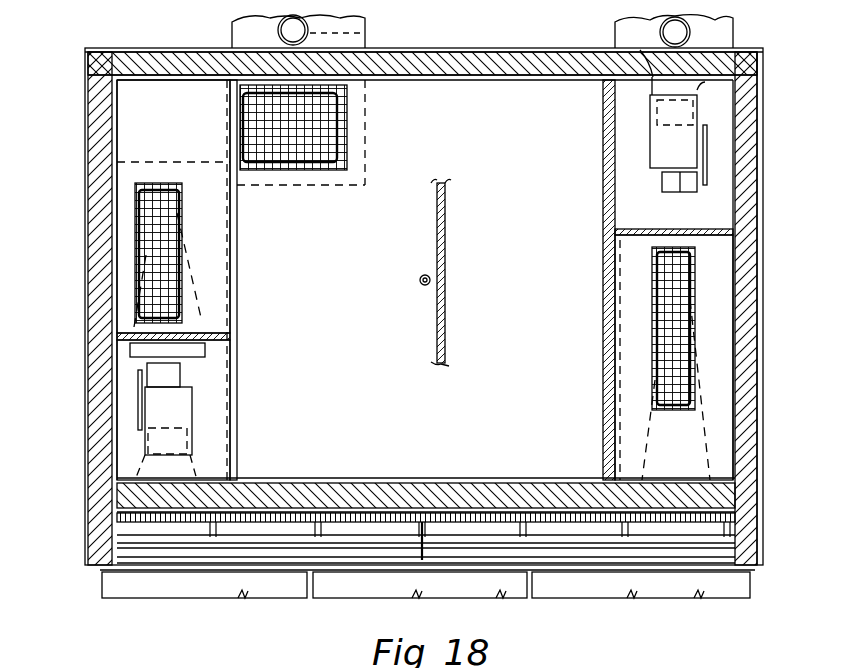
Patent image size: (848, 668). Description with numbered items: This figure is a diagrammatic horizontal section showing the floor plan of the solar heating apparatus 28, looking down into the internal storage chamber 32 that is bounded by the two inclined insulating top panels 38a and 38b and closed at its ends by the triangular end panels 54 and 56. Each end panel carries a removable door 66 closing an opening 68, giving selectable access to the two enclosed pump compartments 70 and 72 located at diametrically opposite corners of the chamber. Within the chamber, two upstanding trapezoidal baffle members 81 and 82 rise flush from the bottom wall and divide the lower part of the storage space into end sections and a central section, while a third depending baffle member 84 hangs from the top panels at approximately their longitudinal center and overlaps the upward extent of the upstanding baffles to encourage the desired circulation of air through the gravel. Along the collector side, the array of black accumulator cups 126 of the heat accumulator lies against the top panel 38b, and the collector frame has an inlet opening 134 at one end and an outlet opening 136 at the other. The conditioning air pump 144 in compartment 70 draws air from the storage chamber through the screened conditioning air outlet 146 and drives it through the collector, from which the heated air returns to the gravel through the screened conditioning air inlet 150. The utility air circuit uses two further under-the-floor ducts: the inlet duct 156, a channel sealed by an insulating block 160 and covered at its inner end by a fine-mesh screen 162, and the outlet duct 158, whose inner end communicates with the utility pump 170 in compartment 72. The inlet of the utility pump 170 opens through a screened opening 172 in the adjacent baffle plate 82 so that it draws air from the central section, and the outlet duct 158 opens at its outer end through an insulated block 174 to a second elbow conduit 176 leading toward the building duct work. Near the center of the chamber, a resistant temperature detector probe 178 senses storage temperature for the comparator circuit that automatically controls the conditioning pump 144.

The solar heating apparatus 28 is at (800, 182).
The storage chamber 32 is at (532, 125).
The inclined top panel 38a is at (503, 52).
The inclined top panel 38b is at (352, 490).
The end panel 54 is at (86, 212).
The end panel 56 is at (758, 265).
The removable door 66 is at (112, 345).
The opening 68 is at (110, 440).
The compartment 70 is at (217, 370).
The compartment 72 is at (608, 202).
The upstanding baffle member 81 is at (237, 253).
The upstanding baffle member 82 is at (612, 354).
The depending baffle member 84 is at (446, 316).
The accumulator cups 126 is at (553, 518).
The inlet opening 134 is at (135, 533).
The outlet opening 136 is at (703, 534).
The conditioning air pump 144 is at (177, 408).
The conditioning air outlet 146 is at (147, 215).
The conditioning air inlet 150 is at (668, 355).
The inlet duct 156 is at (362, 22).
The outlet duct 158 is at (740, 70).
The insulating block 160 is at (255, 33).
The screen 162 is at (328, 130).
The utility pump 170 is at (678, 155).
The screened opening 172 is at (603, 170).
The insulated block 174 is at (633, 28).
The elbow conduit 176 is at (690, 36).
The temperature detector probe 178 is at (419, 280).